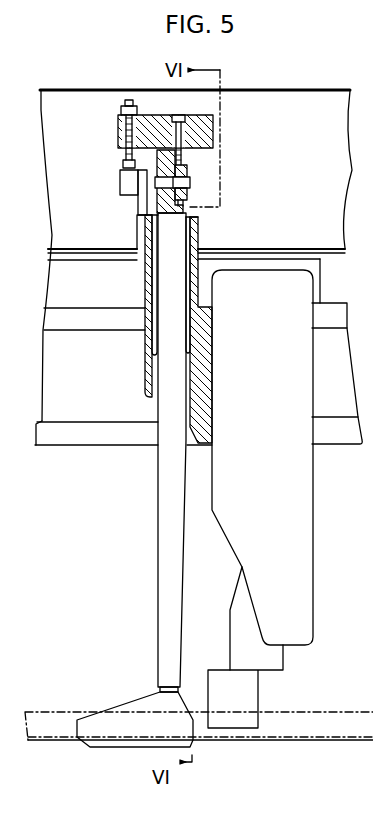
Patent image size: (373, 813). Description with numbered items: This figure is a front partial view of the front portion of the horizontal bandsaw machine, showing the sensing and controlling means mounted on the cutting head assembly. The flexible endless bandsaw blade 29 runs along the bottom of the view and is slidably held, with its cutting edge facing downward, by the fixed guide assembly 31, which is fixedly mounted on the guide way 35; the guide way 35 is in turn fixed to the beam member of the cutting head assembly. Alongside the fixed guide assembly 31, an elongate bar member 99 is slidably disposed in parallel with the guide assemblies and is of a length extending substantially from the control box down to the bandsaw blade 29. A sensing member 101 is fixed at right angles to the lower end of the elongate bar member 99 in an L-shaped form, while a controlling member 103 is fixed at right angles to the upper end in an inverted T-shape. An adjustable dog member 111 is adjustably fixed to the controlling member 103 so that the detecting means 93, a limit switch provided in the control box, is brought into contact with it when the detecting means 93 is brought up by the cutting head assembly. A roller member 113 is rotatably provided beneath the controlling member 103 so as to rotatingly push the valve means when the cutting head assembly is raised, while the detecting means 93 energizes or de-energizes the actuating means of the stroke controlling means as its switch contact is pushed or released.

The bandsaw blade 29 is at (300, 712).
The fixed guide assembly 31 is at (312, 548).
The guide way 35 is at (74, 413).
The detecting means 93 is at (120, 180).
The elongate bar member 99 is at (162, 490).
The sensing member 101 is at (123, 707).
The controlling member 103 is at (214, 114).
The adjustable dog member 111 is at (118, 142).
The roller member 113 is at (190, 170).